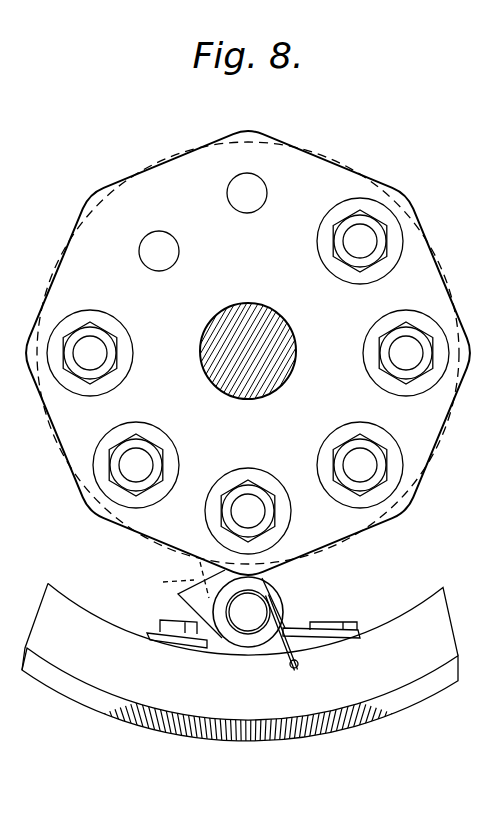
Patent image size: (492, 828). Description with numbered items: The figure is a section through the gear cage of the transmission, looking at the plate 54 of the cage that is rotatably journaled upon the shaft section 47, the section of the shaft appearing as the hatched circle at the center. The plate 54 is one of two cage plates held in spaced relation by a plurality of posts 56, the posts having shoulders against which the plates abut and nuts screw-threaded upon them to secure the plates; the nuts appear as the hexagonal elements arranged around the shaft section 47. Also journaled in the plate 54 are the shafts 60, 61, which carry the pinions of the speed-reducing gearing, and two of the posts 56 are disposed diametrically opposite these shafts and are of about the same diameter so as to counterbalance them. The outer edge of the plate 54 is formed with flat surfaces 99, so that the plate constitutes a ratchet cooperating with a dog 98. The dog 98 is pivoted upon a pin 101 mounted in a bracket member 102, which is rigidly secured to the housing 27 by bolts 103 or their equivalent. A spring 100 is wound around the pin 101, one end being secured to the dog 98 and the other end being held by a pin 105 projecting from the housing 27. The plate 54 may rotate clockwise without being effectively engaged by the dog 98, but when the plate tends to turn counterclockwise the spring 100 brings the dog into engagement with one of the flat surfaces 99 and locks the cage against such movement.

The housing 27 is at (444, 592).
The shaft section 47 is at (249, 314).
The plate 54 is at (343, 178).
The post 56 is at (249, 478).
The shaft 60 is at (248, 180).
The shaft 61 is at (156, 240).
The dog 98 is at (186, 593).
The flat surfaces 99 is at (346, 548).
The spring 100 is at (282, 655).
The pin 101 is at (248, 622).
The bracket member 102 is at (148, 633).
The bolts 103 is at (330, 622).
The pin 105 is at (298, 666).